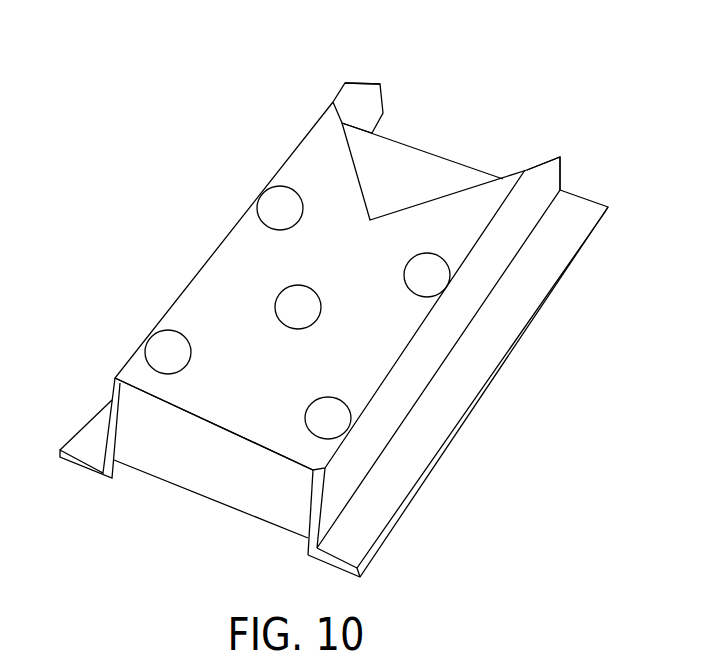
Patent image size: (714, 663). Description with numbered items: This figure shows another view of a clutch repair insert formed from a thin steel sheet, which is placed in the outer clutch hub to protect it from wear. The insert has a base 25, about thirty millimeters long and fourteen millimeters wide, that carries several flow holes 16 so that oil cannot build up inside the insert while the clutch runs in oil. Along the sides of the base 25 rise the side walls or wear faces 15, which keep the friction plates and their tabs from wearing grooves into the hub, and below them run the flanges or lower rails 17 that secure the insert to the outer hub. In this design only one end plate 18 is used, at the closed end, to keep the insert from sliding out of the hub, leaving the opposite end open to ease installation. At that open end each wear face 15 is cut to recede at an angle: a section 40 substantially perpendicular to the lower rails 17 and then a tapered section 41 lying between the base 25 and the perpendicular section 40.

The wear face 15 is at (532, 210).
The flow hole 16 is at (277, 210).
The lower rail 17 is at (520, 342).
The end plate 18 is at (217, 468).
The base 25 is at (213, 293).
The perpendicular section 40 is at (383, 97).
The tapered section 41 is at (368, 84).